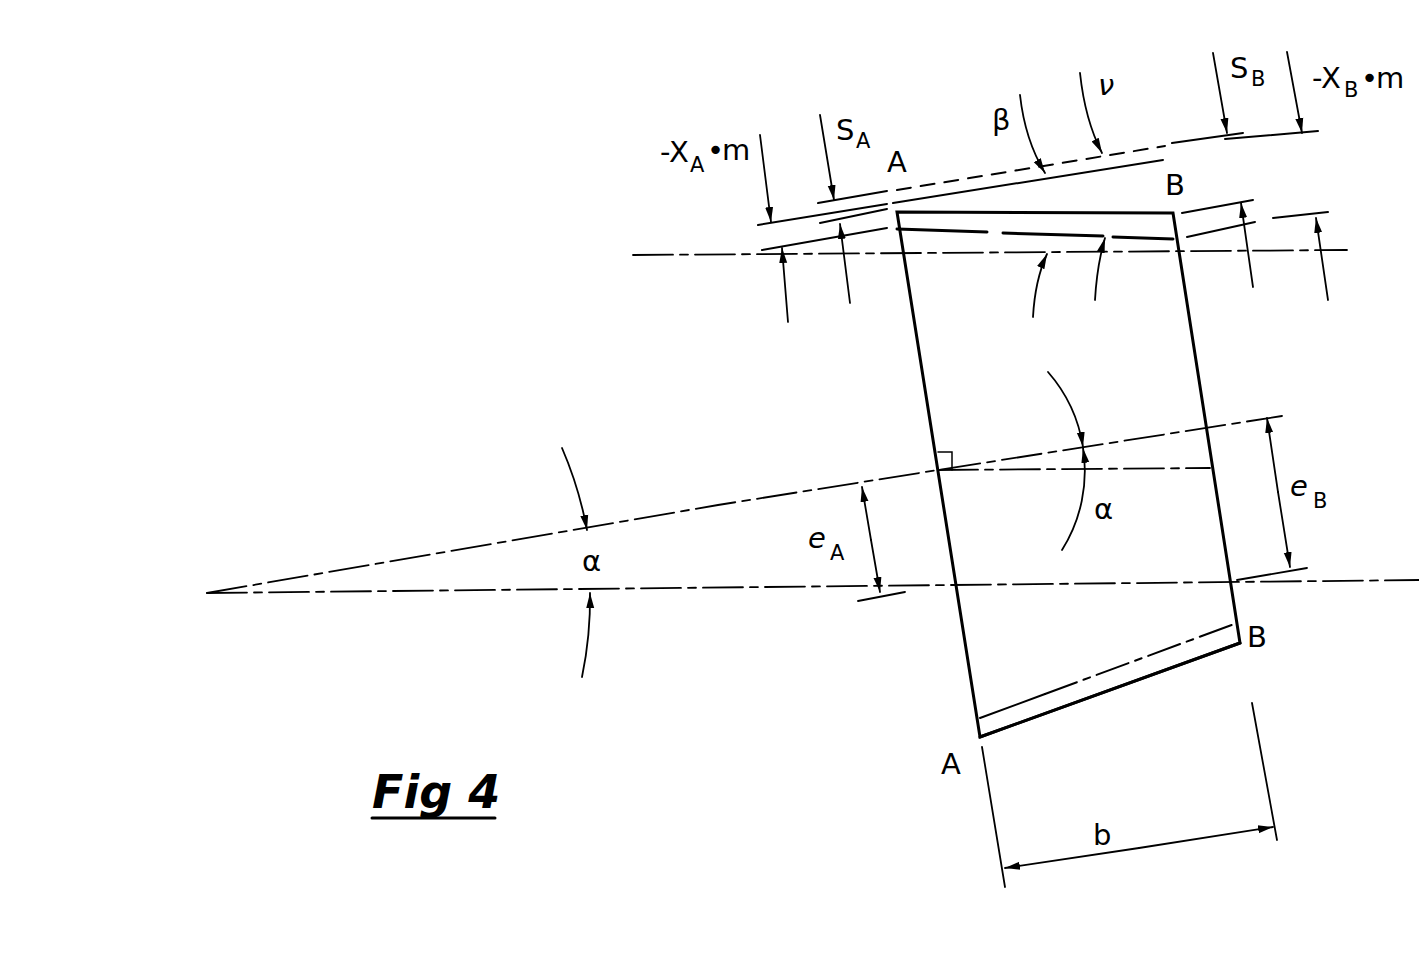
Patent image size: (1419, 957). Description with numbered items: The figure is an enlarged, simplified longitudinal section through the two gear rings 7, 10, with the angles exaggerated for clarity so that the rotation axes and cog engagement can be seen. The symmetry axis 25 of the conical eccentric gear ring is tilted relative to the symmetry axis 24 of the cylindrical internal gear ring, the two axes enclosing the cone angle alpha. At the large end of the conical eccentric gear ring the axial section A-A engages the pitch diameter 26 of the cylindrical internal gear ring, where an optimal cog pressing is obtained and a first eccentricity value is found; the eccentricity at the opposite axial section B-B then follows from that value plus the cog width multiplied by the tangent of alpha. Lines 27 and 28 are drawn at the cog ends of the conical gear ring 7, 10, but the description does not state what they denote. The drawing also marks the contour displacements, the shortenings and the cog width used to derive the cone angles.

The gear ring 7 is at (938, 143).
The gear ring 10 is at (1165, 393).
The symmetry axis of the cylindrical internal gear ring 24 is at (744, 594).
The symmetry axis of the eccentric gear ring 25 is at (716, 505).
The pitch diameter of the cylindrical internal gear ring 26 is at (653, 253).
The inner flank line of tool at A-B 27 is at (1043, 697).
The outer flank edge of tool at A-B 28 is at (1170, 670).